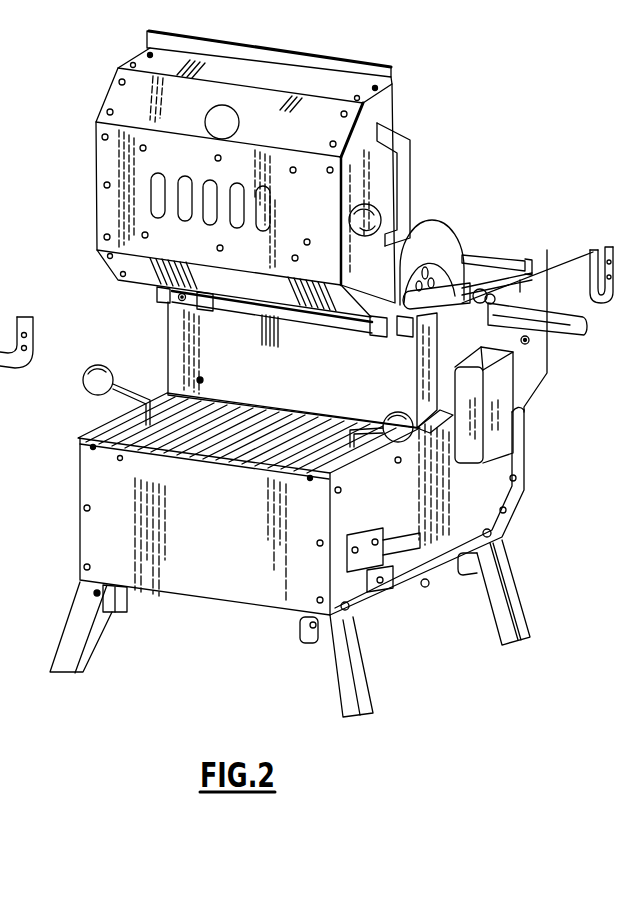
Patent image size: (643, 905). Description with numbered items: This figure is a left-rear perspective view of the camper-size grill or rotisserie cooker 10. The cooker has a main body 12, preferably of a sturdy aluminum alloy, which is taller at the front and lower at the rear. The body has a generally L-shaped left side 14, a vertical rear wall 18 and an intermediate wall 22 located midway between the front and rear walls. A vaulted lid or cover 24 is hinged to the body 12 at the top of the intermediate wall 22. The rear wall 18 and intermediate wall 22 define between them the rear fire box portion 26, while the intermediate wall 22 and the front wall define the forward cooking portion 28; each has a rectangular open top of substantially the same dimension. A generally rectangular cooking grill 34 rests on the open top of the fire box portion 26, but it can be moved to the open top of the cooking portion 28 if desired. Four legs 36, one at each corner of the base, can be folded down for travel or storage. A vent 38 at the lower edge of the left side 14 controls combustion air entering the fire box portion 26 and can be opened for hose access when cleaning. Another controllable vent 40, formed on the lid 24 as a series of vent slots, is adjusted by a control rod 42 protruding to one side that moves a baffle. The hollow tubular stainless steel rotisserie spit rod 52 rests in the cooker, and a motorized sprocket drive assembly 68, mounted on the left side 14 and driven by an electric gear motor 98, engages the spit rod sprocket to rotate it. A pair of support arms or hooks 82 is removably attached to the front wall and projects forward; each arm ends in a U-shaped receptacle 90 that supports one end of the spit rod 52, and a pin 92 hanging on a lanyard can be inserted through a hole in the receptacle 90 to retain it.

The camper-size grill or rotisserie cooker 10 is at (178, 699).
The main body 12 is at (181, 610).
The left side 14 is at (463, 517).
The rear wall 18 is at (90, 533).
The intermediate wall 22 is at (193, 352).
The vaulted lid or cover 24 is at (400, 122).
The rear fire box portion 26 is at (265, 632).
The cooking portion 28 is at (505, 106).
The cooking grill 34 is at (147, 427).
The legs 36 is at (60, 648).
The vent 38 is at (373, 600).
The controllable vent 40 is at (157, 197).
The control rod 42 is at (350, 214).
The rotisserie spit rod 52 is at (517, 313).
The motorized sprocket drive assembly 68 is at (528, 380).
The support arms or hooks 82 is at (600, 324).
The U-shaped receptacle 90 is at (593, 250).
The pin 92 is at (0, 492).
The electric gear motor 98 is at (507, 443).